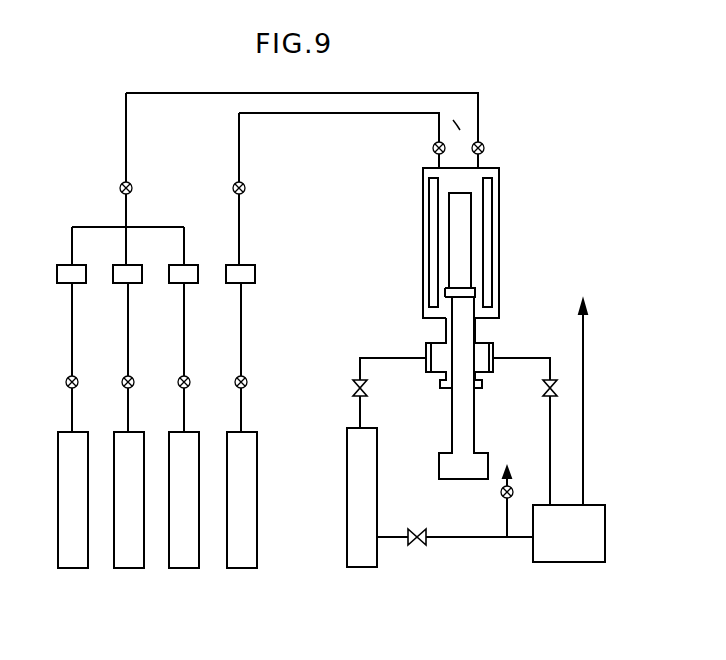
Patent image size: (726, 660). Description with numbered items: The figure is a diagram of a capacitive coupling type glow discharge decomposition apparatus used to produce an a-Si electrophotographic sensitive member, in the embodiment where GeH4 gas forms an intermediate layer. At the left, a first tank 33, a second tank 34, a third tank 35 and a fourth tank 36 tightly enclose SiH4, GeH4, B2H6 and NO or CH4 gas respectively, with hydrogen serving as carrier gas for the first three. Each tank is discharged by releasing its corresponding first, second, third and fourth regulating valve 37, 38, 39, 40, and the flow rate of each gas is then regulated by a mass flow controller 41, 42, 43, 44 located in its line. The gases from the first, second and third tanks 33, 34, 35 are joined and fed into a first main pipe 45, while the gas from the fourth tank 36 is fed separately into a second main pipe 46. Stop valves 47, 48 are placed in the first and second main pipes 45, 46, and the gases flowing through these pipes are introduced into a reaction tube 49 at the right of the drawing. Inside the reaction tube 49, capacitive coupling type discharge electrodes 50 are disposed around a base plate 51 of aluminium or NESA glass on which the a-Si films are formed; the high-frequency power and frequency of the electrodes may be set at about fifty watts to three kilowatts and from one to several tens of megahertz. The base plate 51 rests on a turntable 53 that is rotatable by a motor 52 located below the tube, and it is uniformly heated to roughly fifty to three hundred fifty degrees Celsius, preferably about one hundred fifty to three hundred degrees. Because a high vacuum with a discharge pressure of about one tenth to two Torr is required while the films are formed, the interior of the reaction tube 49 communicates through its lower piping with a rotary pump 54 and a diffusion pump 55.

The first tank 33 is at (76, 562).
The second tank 34 is at (131, 562).
The third tank 35 is at (186, 562).
The fourth tank 36 is at (243, 562).
The first regulating valve 37 is at (69, 377).
The second regulating valve 38 is at (125, 377).
The third regulating valve 39 is at (181, 377).
The fourth regulating valve 40 is at (238, 377).
The mass flow controller 41 is at (67, 268).
The mass flow controller 42 is at (126, 268).
The mass flow controller 43 is at (183, 268).
The mass flow controller 44 is at (240, 268).
The first main pipe 45 is at (125, 138).
The second main pipe 46 is at (238, 140).
The stop valve 47 is at (121, 185).
The stop valve 48 is at (234, 185).
The reaction tube 49 is at (475, 177).
The capacitive coupling type discharge electrodes 50 is at (433, 188).
The base plate 51 is at (462, 246).
The motor 52 is at (464, 475).
The turntable 53 is at (458, 290).
The rotary pump 54 is at (568, 556).
The diffusion pump 55 is at (362, 562).